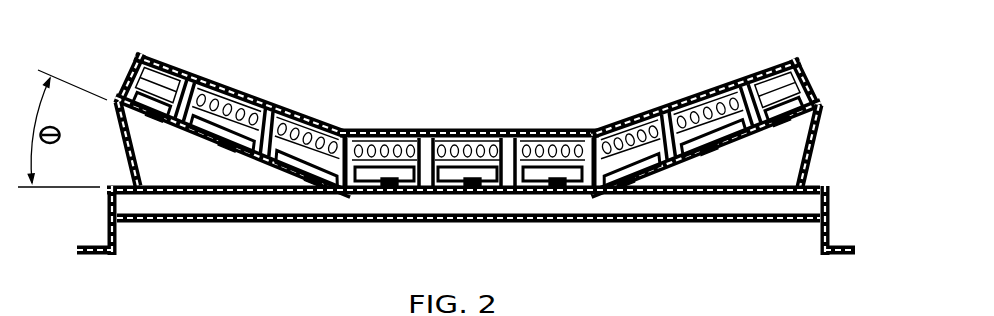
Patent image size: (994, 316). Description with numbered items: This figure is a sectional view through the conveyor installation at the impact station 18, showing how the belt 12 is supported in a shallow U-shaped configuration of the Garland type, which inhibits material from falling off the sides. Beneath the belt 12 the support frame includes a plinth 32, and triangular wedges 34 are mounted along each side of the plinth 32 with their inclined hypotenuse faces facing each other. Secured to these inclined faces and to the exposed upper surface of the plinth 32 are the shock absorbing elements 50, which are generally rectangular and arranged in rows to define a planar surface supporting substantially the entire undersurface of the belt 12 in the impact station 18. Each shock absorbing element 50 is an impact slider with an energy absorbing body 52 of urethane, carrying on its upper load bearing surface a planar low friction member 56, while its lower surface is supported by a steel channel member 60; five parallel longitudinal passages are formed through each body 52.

The belt 12 is at (713, 78).
The impact station 18 is at (315, 63).
The plinth 32 is at (353, 225).
The triangular wedge 34 is at (138, 150).
The shock absorbing element 50 is at (113, 67).
The energy absorbing body 52 is at (413, 137).
The low friction member 56 is at (648, 113).
The steel channel member 60 is at (510, 176).